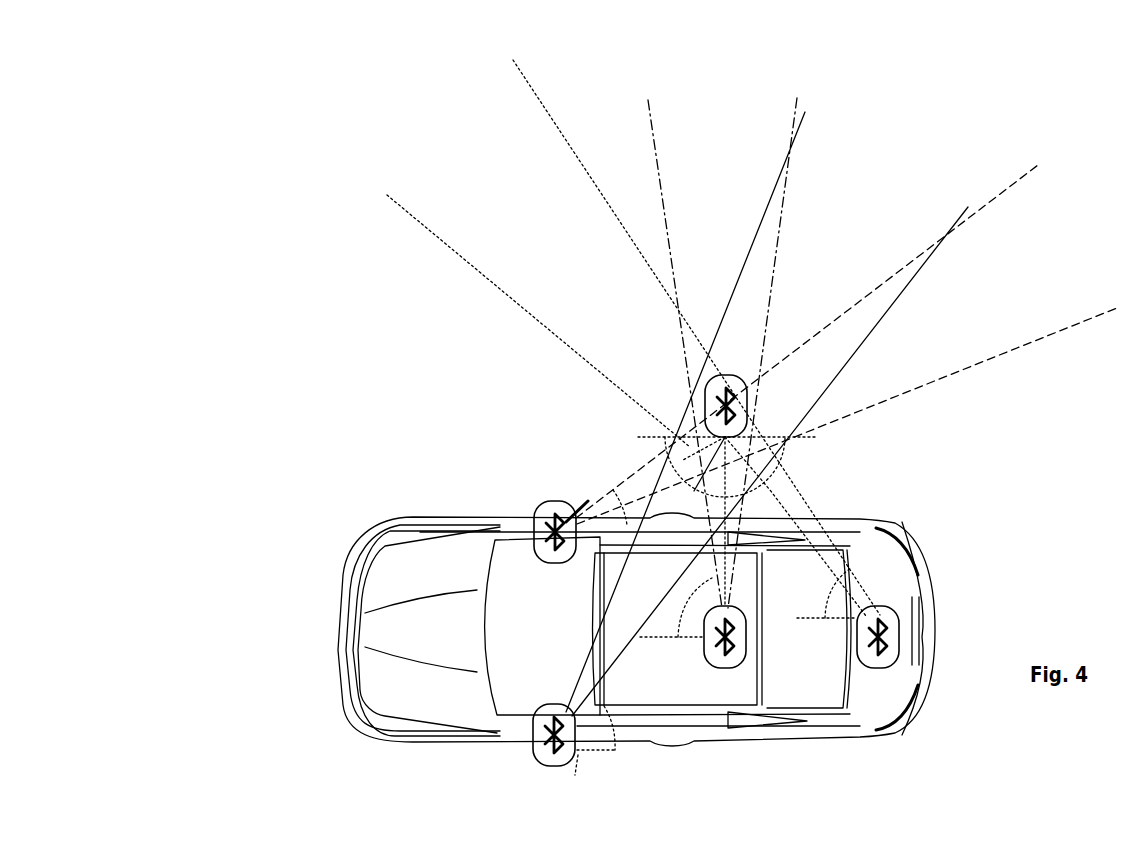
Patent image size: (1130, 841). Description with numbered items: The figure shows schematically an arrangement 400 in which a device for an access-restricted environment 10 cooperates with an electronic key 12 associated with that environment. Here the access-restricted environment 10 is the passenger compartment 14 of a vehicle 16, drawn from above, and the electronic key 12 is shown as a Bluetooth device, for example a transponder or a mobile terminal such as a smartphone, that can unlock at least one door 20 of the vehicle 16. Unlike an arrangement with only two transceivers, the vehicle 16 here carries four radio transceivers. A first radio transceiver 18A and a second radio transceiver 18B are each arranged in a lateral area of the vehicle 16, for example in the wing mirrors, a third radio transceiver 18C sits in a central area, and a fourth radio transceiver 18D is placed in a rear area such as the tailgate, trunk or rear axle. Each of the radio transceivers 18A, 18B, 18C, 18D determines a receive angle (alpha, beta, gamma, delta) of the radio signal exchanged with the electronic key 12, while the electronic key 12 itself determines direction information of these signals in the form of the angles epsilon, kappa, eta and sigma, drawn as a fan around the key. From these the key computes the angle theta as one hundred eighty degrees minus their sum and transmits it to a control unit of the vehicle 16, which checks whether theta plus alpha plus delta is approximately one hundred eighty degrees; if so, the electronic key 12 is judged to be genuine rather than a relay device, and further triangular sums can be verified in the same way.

The arrangement 400 is at (301, 228).
The access-restricted environment 10 is at (455, 481).
The electronic key 12 is at (745, 378).
The passenger compartment 14 is at (819, 695).
The vehicle 16 is at (343, 632).
The first radio transceiver 18A is at (541, 510).
The second radio transceiver 18B is at (546, 767).
The third radio transceiver 18C is at (712, 670).
The fourth radio transceiver 18D is at (898, 660).
The door 20 is at (586, 504).